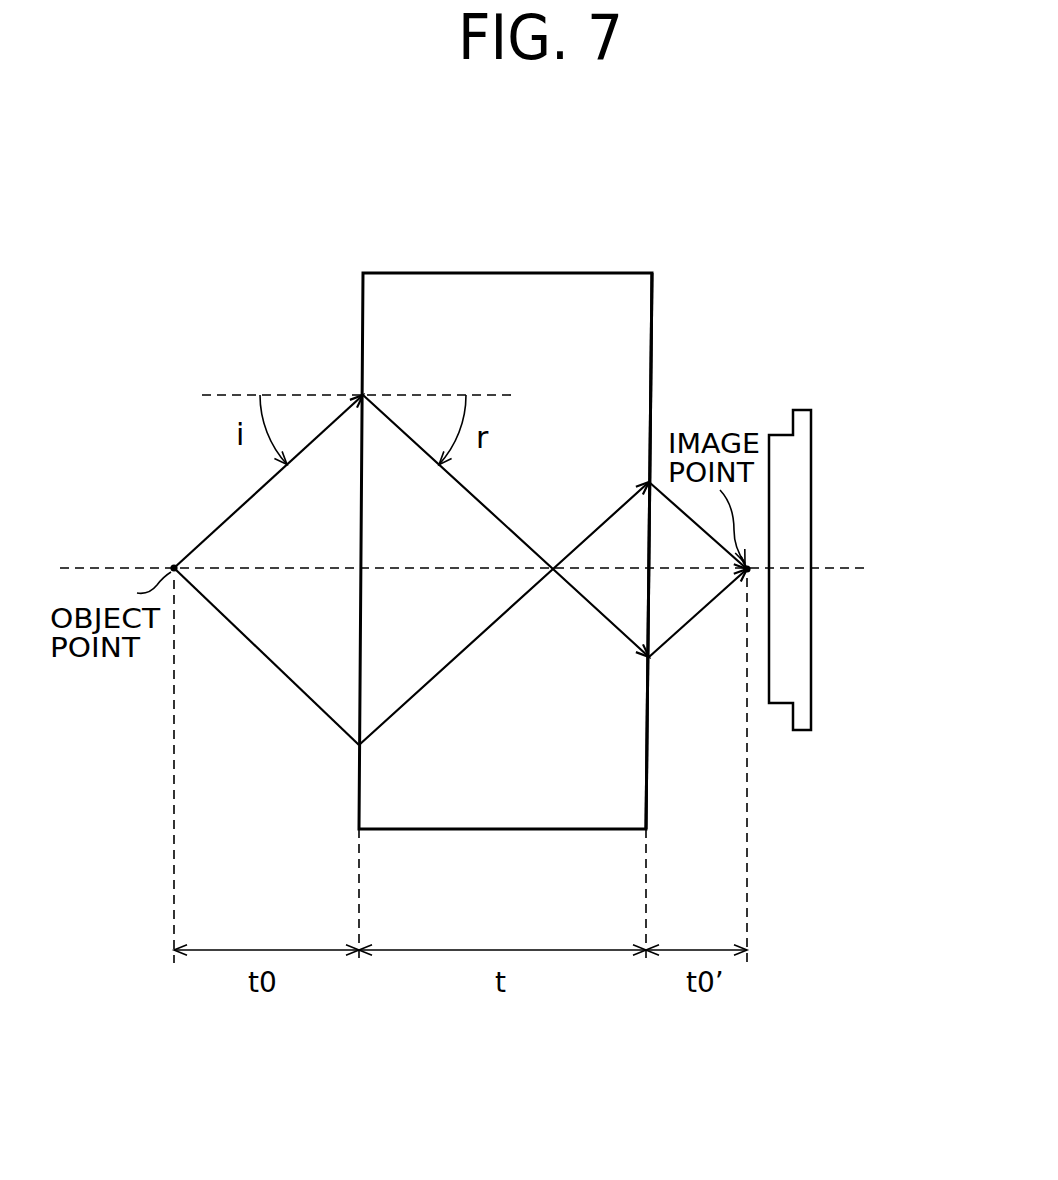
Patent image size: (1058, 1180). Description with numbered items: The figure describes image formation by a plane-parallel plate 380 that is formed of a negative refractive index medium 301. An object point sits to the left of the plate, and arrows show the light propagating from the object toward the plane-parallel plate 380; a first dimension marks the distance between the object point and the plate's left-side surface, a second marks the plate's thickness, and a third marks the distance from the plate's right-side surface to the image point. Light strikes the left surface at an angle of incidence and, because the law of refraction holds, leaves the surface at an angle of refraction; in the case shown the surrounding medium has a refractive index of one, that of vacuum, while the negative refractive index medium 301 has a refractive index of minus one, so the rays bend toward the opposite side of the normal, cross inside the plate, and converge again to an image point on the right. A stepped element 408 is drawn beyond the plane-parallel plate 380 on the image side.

The negative refractive index medium 301 is at (640, 294).
The plane-parallel plate 380 is at (652, 353).
The image sensor 408 is at (811, 693).